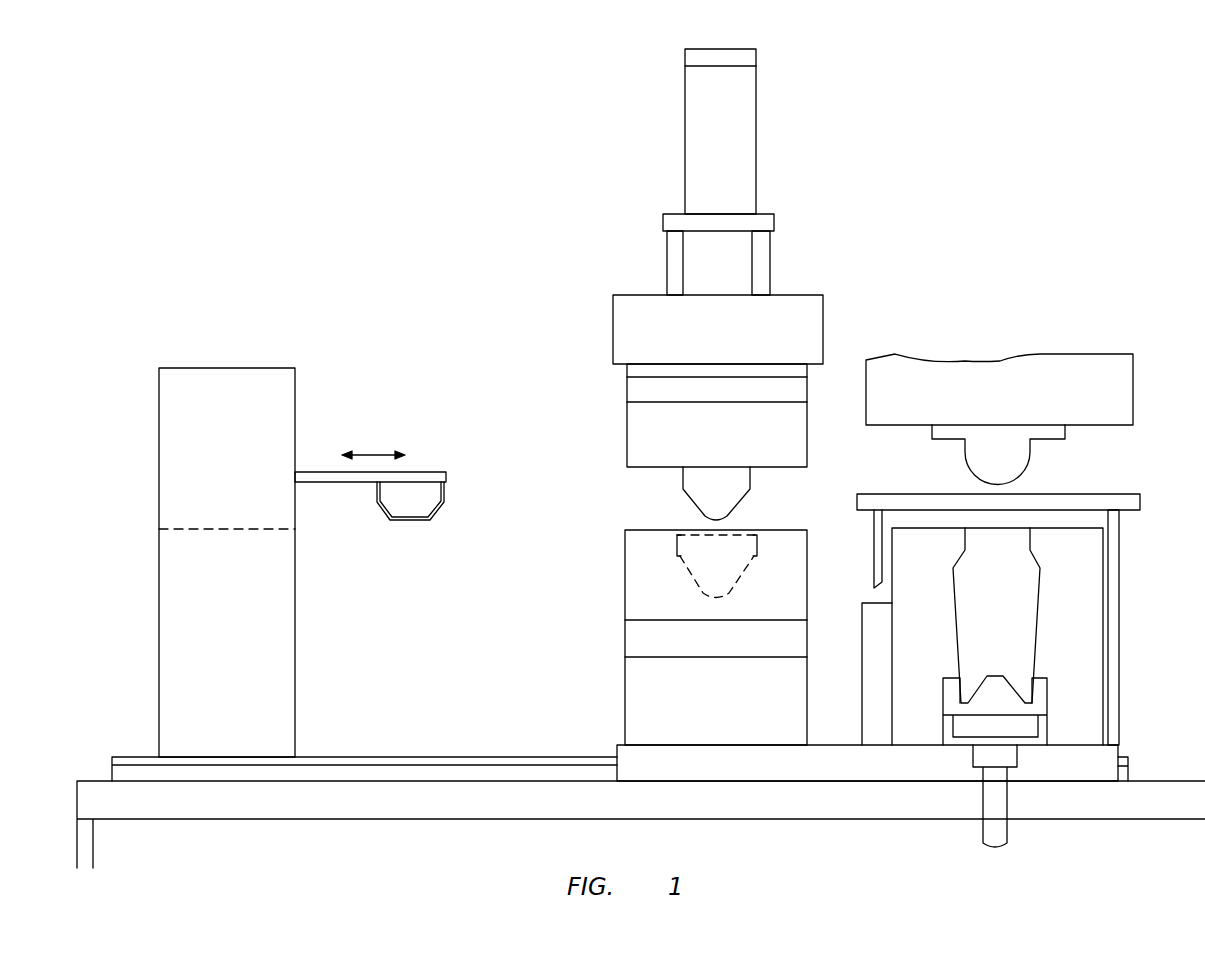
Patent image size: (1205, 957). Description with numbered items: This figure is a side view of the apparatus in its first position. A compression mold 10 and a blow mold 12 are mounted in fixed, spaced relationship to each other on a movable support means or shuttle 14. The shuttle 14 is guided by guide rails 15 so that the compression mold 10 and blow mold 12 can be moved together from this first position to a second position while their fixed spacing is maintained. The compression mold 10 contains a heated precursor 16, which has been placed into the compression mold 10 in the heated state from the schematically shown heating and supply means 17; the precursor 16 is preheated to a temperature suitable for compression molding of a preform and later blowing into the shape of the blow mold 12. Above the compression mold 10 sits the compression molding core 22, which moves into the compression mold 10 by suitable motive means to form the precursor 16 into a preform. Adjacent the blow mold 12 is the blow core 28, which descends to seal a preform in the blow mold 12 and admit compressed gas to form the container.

The compression mold 10 is at (630, 599).
The blow mold 12 is at (1090, 580).
The shuttle 14 is at (830, 774).
The guide rails 15 is at (417, 762).
The heated precursor 16 is at (442, 507).
The heating and supply means 17 is at (287, 589).
The compression molding core 22 is at (728, 494).
The blow core 28 is at (1004, 467).